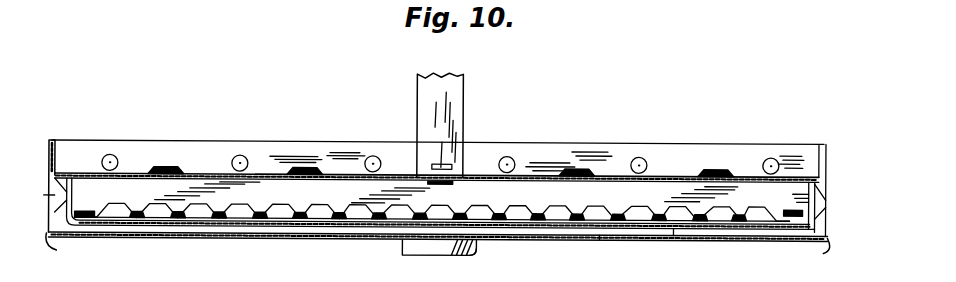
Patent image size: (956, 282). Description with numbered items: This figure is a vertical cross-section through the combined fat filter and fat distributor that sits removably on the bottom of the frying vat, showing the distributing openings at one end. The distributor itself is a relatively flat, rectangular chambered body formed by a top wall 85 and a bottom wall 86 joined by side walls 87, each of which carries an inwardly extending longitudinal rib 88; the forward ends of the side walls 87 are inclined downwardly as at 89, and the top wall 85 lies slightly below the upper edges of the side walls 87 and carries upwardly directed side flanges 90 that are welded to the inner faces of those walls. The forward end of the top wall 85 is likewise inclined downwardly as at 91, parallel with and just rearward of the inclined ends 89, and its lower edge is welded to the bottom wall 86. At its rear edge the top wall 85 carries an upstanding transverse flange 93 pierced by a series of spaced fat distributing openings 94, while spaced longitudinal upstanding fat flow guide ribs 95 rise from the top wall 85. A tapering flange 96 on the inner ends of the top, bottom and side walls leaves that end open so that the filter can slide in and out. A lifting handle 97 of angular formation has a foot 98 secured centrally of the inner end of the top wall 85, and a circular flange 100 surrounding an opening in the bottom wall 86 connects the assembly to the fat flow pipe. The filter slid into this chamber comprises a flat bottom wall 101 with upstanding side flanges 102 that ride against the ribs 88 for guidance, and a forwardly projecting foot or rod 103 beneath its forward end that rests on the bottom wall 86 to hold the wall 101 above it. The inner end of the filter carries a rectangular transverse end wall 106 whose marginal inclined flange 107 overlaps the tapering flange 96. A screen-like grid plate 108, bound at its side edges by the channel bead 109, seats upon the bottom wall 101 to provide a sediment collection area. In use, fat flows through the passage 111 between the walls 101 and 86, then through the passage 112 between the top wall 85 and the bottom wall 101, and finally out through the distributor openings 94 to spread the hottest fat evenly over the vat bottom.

The top wall 85 is at (208, 173).
The bottom wall 86 is at (206, 239).
The side walls 87 is at (826, 250).
The longitudinal ribs 88 is at (74, 198).
The downwardly inclined forward ends 89 is at (83, 278).
The side flanges 90 is at (58, 162).
The downwardly inclined forward end 91 is at (108, 280).
The transversely extending flange 93 is at (664, 162).
The fat distributing openings 94 is at (247, 157).
The fat flow guide ribs 95 is at (168, 165).
The tapering flange 96 is at (790, 281).
The lifting handle 97 is at (445, 104).
The foot 98 is at (463, 163).
The circular flange 100 is at (480, 247).
The bottom wall 101 is at (674, 231).
The side flanges 102 is at (82, 172).
The foot or rod 103 is at (168, 273).
The inner end wall 106 is at (537, 275).
The inclined flange 107 is at (819, 273).
The grid plate 108 is at (609, 212).
The channel bead 109 is at (95, 203).
The passage 111 is at (335, 231).
The passage 112 is at (439, 203).